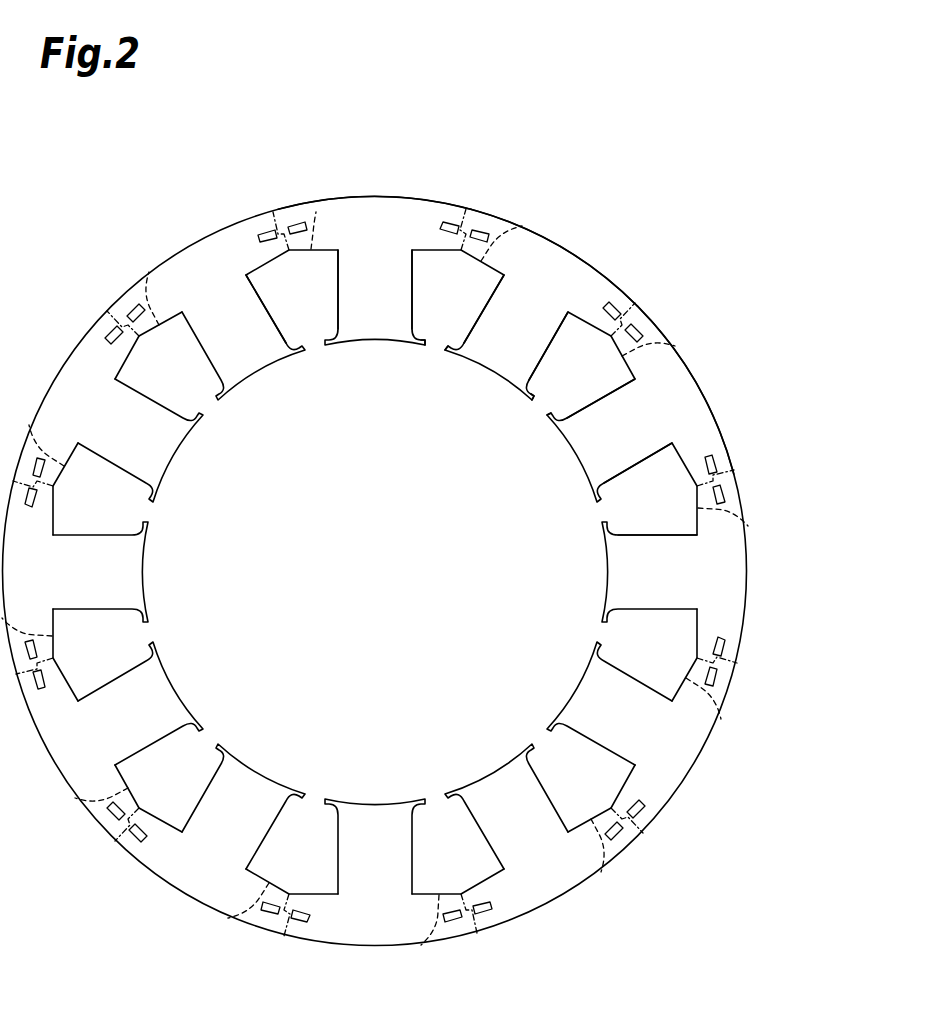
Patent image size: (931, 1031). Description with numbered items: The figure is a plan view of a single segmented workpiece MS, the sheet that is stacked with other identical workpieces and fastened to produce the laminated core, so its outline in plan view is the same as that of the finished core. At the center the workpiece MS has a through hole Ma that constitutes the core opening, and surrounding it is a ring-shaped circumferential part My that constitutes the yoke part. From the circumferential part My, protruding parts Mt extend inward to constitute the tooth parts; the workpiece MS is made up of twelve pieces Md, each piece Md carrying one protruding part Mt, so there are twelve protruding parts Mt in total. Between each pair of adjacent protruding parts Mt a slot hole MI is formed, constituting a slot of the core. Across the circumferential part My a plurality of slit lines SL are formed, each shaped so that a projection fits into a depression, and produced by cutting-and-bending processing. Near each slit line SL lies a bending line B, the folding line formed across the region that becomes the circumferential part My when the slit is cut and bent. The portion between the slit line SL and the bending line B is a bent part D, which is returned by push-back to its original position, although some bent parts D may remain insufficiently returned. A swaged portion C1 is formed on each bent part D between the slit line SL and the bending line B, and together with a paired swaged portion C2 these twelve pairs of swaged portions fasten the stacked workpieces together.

The workpiece MS is at (585, 139).
The circumferential part My is at (392, 208).
The protruding part Mt is at (352, 330).
The piece Md is at (440, 200).
The bent part D is at (300, 243).
The slot hole MI is at (437, 352).
The slit line SL is at (281, 215).
The swaged portion C1 is at (297, 221).
The swaged portion C2 is at (264, 231).
The bending line B is at (316, 212).
The through hole Ma is at (393, 589).